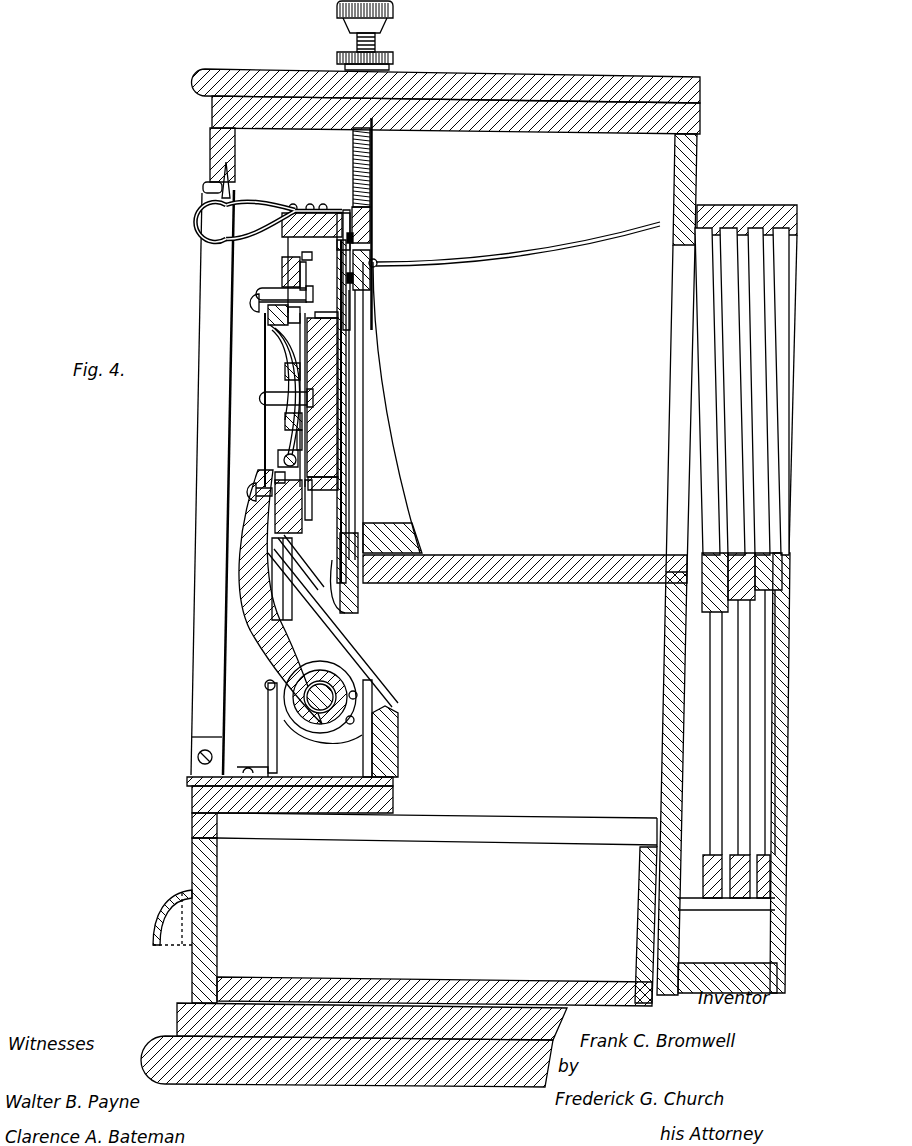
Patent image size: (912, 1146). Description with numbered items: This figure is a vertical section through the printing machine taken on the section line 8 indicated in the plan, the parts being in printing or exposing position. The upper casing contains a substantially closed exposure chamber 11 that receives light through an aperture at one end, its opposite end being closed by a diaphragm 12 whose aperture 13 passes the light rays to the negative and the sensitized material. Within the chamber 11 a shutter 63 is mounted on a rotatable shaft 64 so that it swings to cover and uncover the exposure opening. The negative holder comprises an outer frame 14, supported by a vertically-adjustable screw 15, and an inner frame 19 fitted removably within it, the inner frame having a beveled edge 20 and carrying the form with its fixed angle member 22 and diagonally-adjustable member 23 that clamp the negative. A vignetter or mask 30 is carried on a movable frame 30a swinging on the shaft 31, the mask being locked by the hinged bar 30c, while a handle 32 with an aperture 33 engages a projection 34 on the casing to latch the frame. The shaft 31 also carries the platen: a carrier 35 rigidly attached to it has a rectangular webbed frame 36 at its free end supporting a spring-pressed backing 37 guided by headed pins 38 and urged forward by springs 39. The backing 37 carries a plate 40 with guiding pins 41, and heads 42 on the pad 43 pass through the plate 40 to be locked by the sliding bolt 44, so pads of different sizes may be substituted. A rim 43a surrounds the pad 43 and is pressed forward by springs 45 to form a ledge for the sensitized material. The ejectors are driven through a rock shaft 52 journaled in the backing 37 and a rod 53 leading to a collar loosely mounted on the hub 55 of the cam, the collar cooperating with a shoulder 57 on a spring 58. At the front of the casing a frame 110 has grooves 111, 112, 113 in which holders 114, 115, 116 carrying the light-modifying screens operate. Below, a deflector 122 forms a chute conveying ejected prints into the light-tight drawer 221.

The adjusting screw / knob 8 is at (357, 128).
The printing or exposure chamber 11 is at (513, 344).
The diaphragm 12 is at (374, 195).
The aperture 13 is at (369, 368).
The outer frame 14 is at (366, 226).
The vertically-adjustable screw 15 is at (374, 162).
The inner frame 19 is at (372, 280).
The beveled edge 20 is at (340, 592).
The angle member 22 is at (308, 574).
The diagonally-adjustable member 23 is at (360, 292).
The vignetter or mask 30 is at (346, 505).
The movable frame 30a is at (306, 214).
The hinged bar 30c is at (340, 207).
The shaft 31 is at (356, 700).
The handle 32 is at (196, 228).
The aperture 33 is at (240, 201).
The projection 34 is at (230, 184).
The carrier 35 is at (253, 598).
The rectangular webbed frame 36 is at (290, 362).
The spring-pressed backing 37 is at (290, 526).
The headed pins 38 is at (248, 301).
The springs 39 is at (272, 330).
The plate 40 is at (318, 276).
The guiding pins 41 is at (268, 290).
The heads or enlargements 42 is at (298, 438).
The pad 43 is at (333, 418).
The rim 43a is at (340, 485).
The sliding bolt 44 is at (283, 270).
The springs 45 is at (318, 500).
The rock shaft 52 is at (286, 461).
The rod 53 is at (262, 648).
The hub 55 is at (298, 726).
The shoulder 57 is at (268, 686).
The spring 58 is at (270, 770).
The shutter 63 is at (506, 250).
The rotatable shaft 64 is at (376, 260).
The frame 110 is at (710, 215).
The groove 111 is at (706, 235).
The groove 112 is at (756, 235).
The groove 113 is at (778, 235).
The holder 114 is at (718, 554).
The holder 115 is at (746, 554).
The holder 116 is at (770, 554).
The deflector 122 is at (342, 653).
The drawer 221 is at (437, 909).